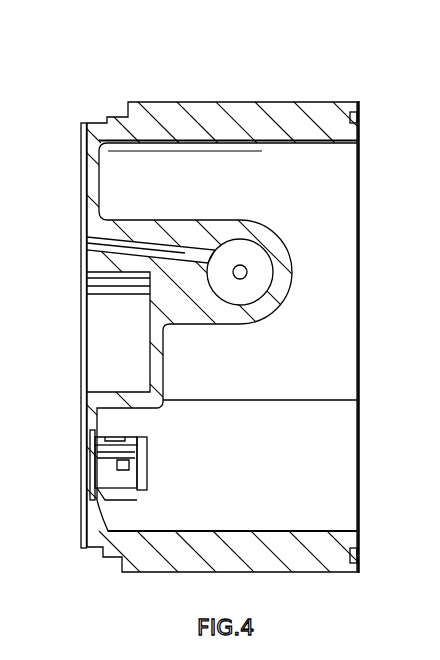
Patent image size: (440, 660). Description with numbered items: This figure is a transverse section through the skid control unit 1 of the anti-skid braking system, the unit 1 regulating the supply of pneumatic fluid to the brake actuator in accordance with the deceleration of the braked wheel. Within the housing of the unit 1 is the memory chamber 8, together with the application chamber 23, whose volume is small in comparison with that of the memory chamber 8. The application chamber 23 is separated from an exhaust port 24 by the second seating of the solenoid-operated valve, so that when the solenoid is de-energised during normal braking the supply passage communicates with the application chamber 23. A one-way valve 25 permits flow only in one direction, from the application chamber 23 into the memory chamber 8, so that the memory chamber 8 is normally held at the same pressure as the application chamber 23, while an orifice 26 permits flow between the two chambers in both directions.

The skid control unit 1 is at (246, 110).
The memory chamber 8 is at (248, 452).
The application chamber 23 is at (82, 357).
The exhaust port 24 is at (240, 272).
The one-way valve 25 is at (148, 456).
The orifice 26 is at (115, 436).